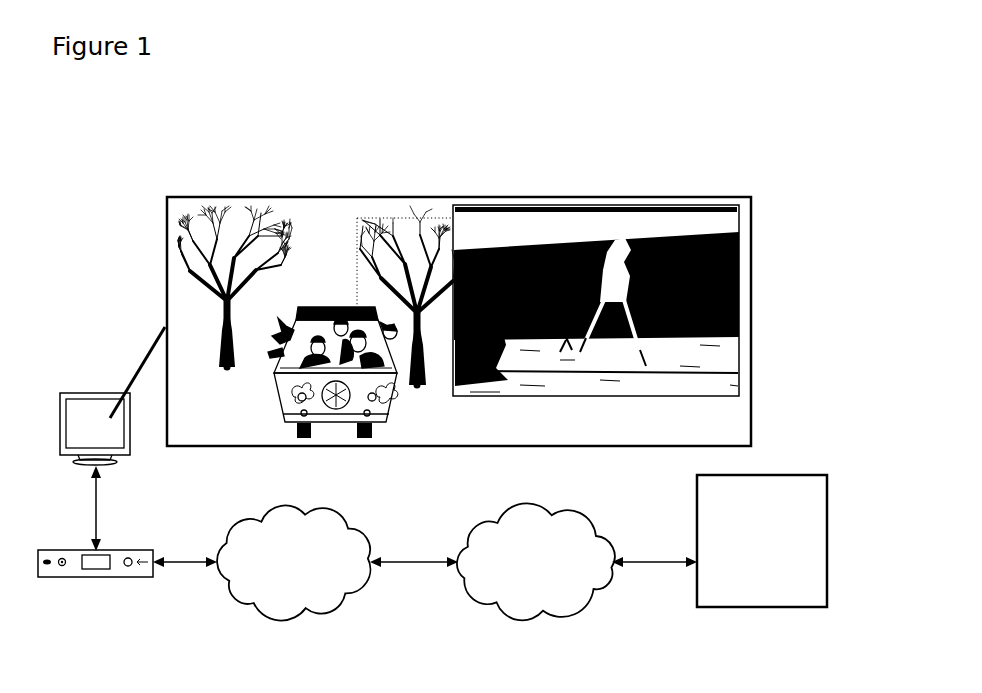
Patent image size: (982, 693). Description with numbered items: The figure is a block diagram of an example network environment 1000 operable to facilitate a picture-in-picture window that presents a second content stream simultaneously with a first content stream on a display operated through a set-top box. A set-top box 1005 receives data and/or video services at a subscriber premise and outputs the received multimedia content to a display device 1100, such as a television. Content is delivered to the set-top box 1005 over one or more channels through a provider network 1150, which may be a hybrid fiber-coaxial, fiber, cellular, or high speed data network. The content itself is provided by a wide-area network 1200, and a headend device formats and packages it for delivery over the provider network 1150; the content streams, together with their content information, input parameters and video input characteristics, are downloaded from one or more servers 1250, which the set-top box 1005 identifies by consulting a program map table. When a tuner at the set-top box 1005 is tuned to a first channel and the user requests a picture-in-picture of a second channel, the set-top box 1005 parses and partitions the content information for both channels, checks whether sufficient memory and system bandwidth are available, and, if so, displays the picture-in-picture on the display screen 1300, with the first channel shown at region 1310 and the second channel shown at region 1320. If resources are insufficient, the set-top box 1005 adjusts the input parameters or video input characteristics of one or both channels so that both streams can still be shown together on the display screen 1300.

The network environment 1000 is at (117, 182).
The display device 1100 is at (75, 392).
The set-top box 1005 is at (88, 578).
The provider network 1150 is at (273, 612).
The wide-area network 1200 is at (523, 614).
The servers 1250 is at (745, 608).
The display screen 1300 is at (307, 190).
The channel 1 display region 1310 is at (357, 237).
The channel 2 display region 1320 is at (565, 205).